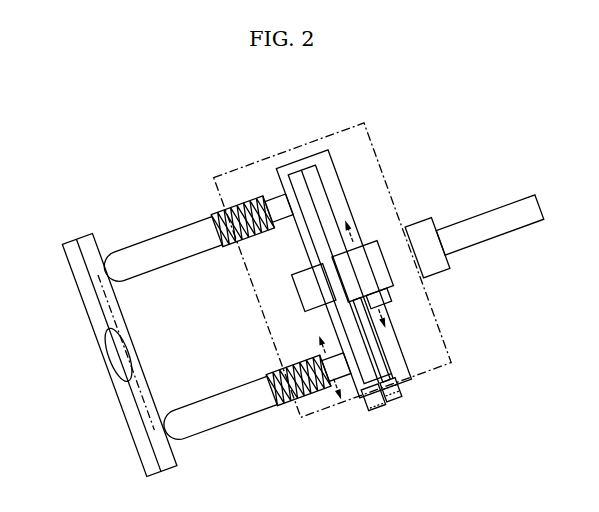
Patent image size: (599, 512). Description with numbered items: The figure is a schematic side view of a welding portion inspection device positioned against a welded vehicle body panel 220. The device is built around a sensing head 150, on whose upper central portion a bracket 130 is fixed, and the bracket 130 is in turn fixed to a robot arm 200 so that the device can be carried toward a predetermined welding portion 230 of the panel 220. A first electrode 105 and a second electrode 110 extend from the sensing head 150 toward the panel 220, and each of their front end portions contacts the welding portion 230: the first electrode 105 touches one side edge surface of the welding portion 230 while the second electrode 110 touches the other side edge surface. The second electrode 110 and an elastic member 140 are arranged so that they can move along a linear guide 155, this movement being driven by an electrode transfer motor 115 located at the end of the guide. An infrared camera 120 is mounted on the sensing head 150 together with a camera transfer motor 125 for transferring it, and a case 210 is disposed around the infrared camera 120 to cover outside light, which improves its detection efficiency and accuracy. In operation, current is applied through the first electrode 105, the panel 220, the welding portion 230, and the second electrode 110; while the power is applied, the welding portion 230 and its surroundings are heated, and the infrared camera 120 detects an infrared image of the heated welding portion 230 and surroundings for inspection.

The first electrode 105 is at (195, 404).
The second electrode 110 is at (152, 247).
The electrode transfer motor 115 is at (374, 411).
The infrared camera 120 is at (370, 276).
The camera transfer motor 125 is at (396, 406).
The bracket 130 is at (427, 218).
The elastic member 140 is at (222, 249).
The sensing head 150 is at (291, 169).
The linear guide 155 is at (378, 363).
The robot arm 200 is at (497, 213).
The case 210 is at (450, 340).
The panel 220 is at (140, 446).
The welding portion 230 is at (115, 361).